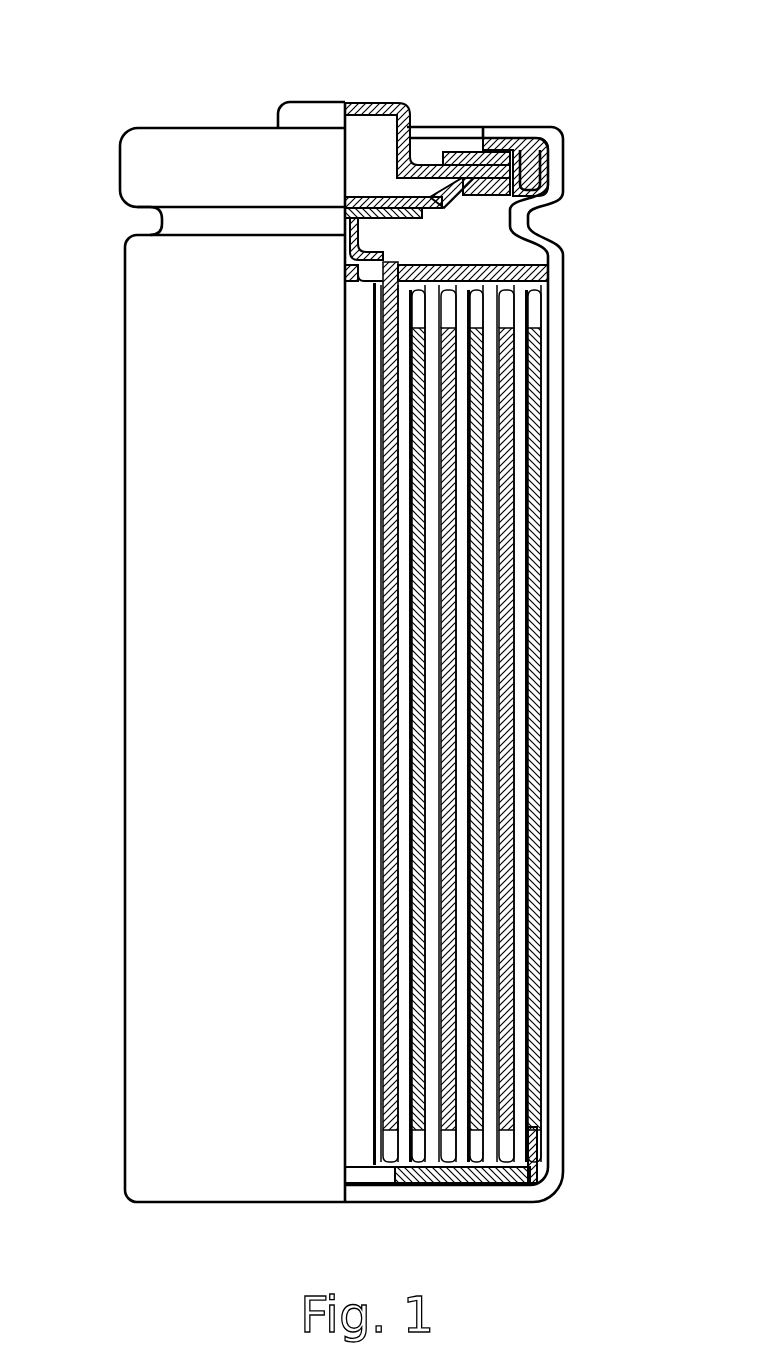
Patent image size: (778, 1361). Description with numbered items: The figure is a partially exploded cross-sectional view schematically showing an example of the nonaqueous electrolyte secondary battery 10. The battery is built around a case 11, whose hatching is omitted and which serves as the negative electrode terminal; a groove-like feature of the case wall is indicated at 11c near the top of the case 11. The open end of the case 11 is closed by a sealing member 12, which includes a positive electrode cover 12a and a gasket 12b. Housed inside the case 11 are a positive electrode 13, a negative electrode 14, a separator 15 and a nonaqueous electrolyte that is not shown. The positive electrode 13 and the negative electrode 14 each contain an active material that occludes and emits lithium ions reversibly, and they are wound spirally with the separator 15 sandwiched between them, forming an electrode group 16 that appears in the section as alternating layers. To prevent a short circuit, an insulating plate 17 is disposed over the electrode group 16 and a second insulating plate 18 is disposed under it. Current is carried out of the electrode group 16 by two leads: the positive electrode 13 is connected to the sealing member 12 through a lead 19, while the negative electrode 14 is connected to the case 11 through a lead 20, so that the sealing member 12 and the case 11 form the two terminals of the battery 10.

The nonaqueous electrolyte secondary battery 10 is at (158, 100).
The case 11 is at (519, 664).
The groove of battery case 11c is at (571, 223).
The sealing member 12 is at (425, 50).
The positive electrode cover 12a is at (407, 103).
The gasket 12b is at (531, 136).
The positive electrode 13 is at (510, 400).
The negative electrode 14 is at (533, 450).
The separator 15 is at (517, 487).
The electrode group 16 is at (528, 713).
The insulating plate 17 is at (547, 262).
The insulating plate 18 is at (433, 1187).
The lead 19 is at (383, 205).
The lead 20 is at (537, 1148).